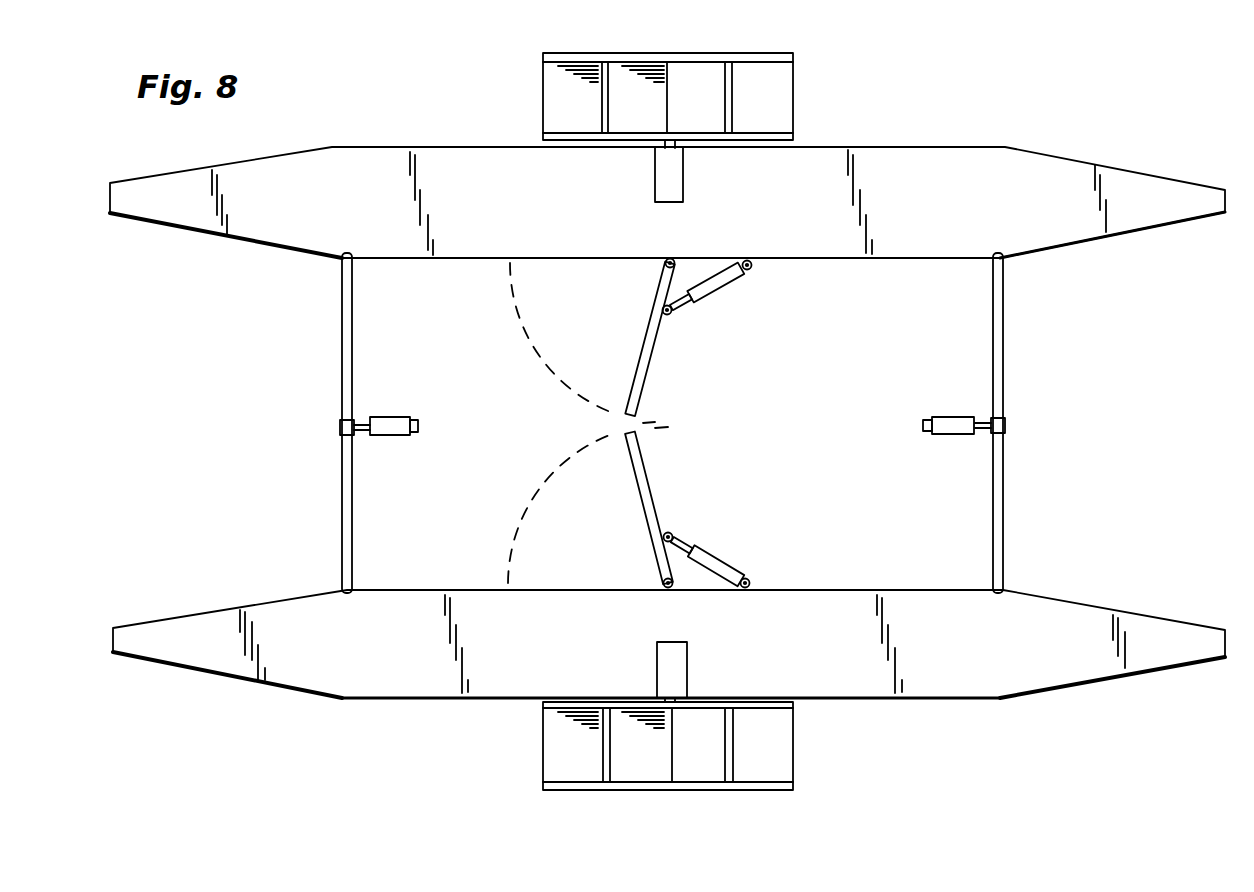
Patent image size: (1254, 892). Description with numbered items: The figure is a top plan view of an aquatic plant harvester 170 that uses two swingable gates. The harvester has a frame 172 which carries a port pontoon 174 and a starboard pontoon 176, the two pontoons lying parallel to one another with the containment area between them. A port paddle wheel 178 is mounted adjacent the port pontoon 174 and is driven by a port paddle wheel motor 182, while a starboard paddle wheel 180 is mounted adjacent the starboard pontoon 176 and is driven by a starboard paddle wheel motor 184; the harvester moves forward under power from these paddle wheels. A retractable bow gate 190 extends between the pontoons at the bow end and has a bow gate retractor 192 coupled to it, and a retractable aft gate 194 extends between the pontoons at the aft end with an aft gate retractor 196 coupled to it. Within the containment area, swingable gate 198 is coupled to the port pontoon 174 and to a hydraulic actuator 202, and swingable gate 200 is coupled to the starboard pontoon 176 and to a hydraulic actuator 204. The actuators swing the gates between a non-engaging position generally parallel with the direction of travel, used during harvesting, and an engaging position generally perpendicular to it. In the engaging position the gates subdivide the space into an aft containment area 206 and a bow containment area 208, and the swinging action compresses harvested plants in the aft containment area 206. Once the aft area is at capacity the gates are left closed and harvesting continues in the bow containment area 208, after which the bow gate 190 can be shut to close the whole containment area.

The aquatic plant harvester 170 is at (1146, 117).
The frame 172 is at (338, 481).
The port pontoon 174 is at (243, 680).
The starboard pontoon 176 is at (243, 243).
The port paddle wheel 178 is at (702, 768).
The starboard paddle wheel 180 is at (797, 70).
The port paddle wheel motor 182 is at (687, 655).
The starboard paddle wheel motor 184 is at (683, 175).
The retractable bow gate 190 is at (342, 350).
The bow gate retractor 192 is at (397, 417).
The retractable aft gate 194 is at (1005, 311).
The aft gate retractor 196 is at (943, 437).
The swingable gate 198 is at (648, 470).
The swingable gate 200 is at (643, 385).
The hydraulic actuator 202 is at (730, 568).
The hydraulic actuator 204 is at (715, 287).
The aft containment area 206 is at (950, 270).
The bow containment area 208 is at (478, 268).